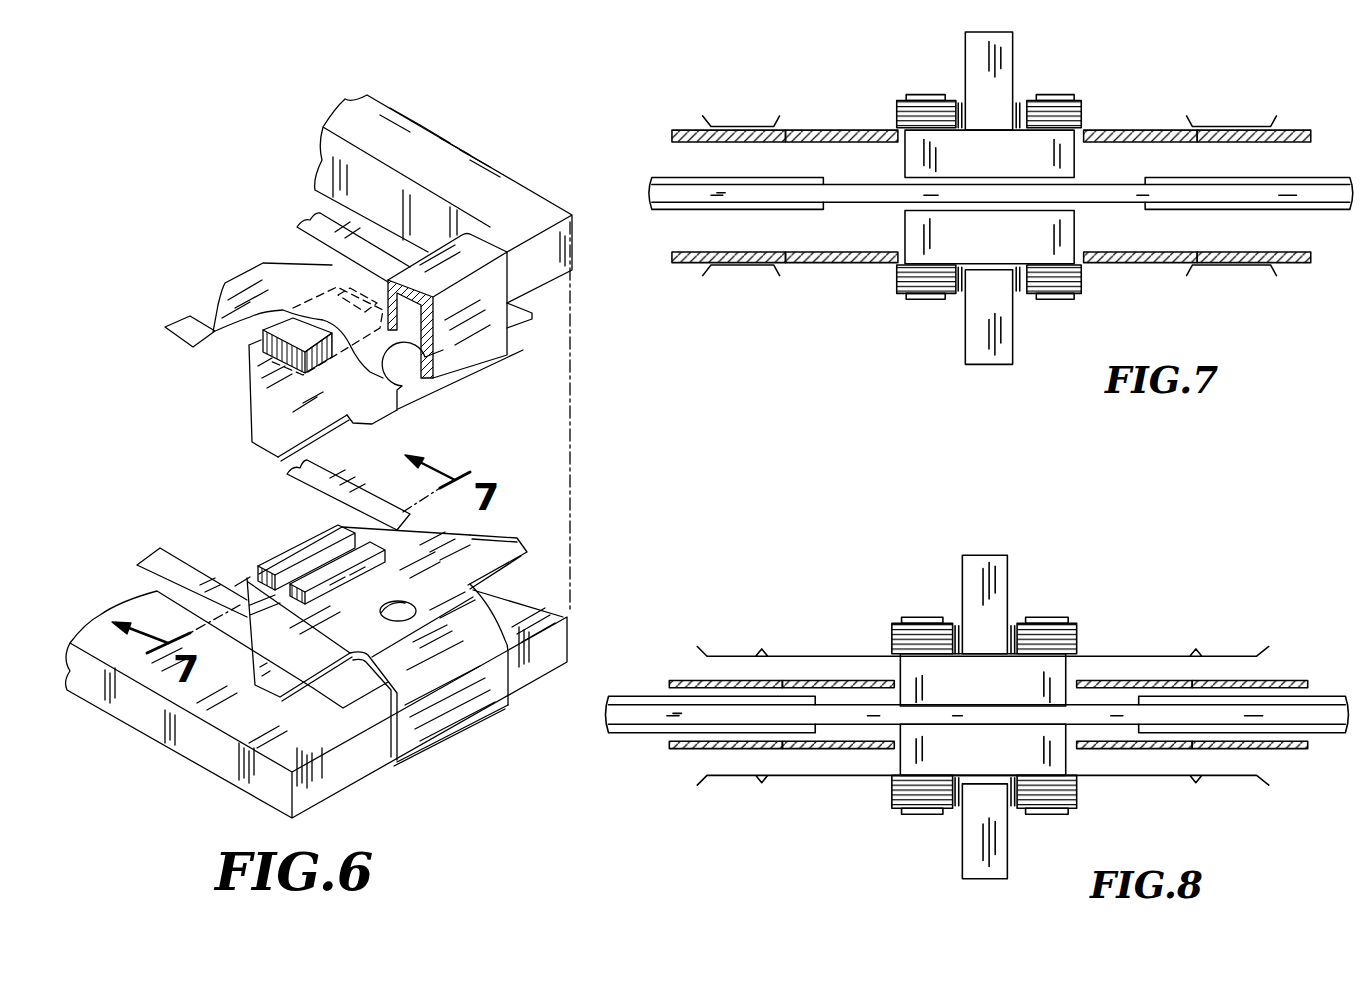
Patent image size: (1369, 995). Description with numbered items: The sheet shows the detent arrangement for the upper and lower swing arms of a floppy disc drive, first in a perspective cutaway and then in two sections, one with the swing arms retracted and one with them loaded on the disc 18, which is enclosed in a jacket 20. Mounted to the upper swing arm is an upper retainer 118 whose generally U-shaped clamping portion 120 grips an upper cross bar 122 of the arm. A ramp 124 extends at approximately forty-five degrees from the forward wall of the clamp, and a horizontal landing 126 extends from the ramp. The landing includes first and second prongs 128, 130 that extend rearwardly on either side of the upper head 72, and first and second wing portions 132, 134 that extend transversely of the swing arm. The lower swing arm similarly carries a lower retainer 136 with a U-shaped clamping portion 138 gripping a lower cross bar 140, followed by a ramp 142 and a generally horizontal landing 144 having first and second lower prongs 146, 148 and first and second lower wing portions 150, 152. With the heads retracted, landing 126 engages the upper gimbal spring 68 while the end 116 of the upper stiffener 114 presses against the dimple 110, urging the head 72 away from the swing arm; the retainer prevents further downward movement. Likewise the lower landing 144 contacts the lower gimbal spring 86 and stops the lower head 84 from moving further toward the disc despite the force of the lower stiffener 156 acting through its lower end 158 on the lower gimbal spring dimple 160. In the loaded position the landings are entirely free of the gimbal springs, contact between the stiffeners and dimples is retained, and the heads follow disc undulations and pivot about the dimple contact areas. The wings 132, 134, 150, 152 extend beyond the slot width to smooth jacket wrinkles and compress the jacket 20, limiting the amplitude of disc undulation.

In FIG. 7, the disc 18 is at (1203, 165).
In FIG. 8, the disc 18 is at (1201, 682).
In FIG. 7, the jacket 20 is at (697, 177).
In FIG. 8, the jacket 20 is at (628, 692).
In FIG. 7, the upper gimbal spring 68 is at (725, 106).
In FIG. 8, the upper gimbal spring 68 is at (806, 628).
In FIG. 7, the upper head 72 is at (962, 139).
In FIG. 8, the upper head 72 is at (928, 666).
In FIG. 7, the lower head 84 is at (962, 212).
In FIG. 8, the lower head 84 is at (928, 713).
In FIG. 7, the lower gimbal spring 86 is at (990, 299).
In FIG. 8, the lower gimbal spring 86 is at (983, 798).
In FIG. 7, the dimple 110 is at (932, 103).
In FIG. 8, the dimple 110 is at (915, 626).
In FIG. 7, the upper stiffener 114 is at (955, 36).
In FIG. 8, the upper stiffener 114 is at (1020, 589).
In FIG. 7, the end 116 is at (1043, 89).
In FIG. 8, the end 116 is at (1035, 619).
In FIG. 6, the upper retainer 118 is at (457, 373).
In FIG. 6, the clamping portion 120 is at (573, 242).
In FIG. 6, the upper cross bar 122 is at (520, 213).
In FIG. 6, the ramp 124 is at (388, 415).
In FIG. 6, the landing 126 is at (345, 397).
In FIG. 6, the first prong 128 is at (262, 373).
In FIG. 7, the first prong 128 is at (801, 122).
In FIG. 8, the first prong 128 is at (820, 652).
In FIG. 6, the second prong 130 is at (340, 282).
In FIG. 7, the second prong 130 is at (1141, 150).
In FIG. 8, the second prong 130 is at (1000, 652).
In FIG. 6, the first wing portion 132 is at (270, 437).
In FIG. 7, the first wing portion 132 is at (683, 122).
In FIG. 8, the first wing portion 132 is at (661, 650).
In FIG. 6, the second wing portion 134 is at (517, 313).
In FIG. 7, the second wing portion 134 is at (1167, 121).
In FIG. 8, the second wing portion 134 is at (1251, 649).
In FIG. 6, the lower retainer 136 is at (447, 715).
In FIG. 6, the clamping portion 138 is at (395, 762).
In FIG. 6, the lower cross bar 140 is at (350, 750).
In FIG. 6, the ramp 142 is at (470, 632).
In FIG. 6, the landing 144 is at (455, 578).
In FIG. 6, the first lower prong 146 is at (217, 577).
In FIG. 7, the first lower prong 146 is at (850, 212).
In FIG. 8, the first lower prong 146 is at (869, 754).
In FIG. 6, the second lower prong 148 is at (385, 540).
In FIG. 7, the second lower prong 148 is at (1141, 240).
In FIG. 8, the second lower prong 148 is at (1101, 754).
In FIG. 6, the first lower wing portion 150 is at (278, 672).
In FIG. 7, the first lower wing portion 150 is at (695, 213).
In FIG. 8, the first lower wing portion 150 is at (692, 776).
In FIG. 6, the second lower wing portion 152 is at (498, 548).
In FIG. 7, the second lower wing portion 152 is at (1261, 240).
In FIG. 8, the second lower wing portion 152 is at (1258, 780).
In FIG. 7, the lower stiffener 156 is at (923, 293).
In FIG. 8, the lower stiffener 156 is at (900, 803).
In FIG. 7, the lower end 158 is at (1038, 299).
In FIG. 8, the lower end 158 is at (1035, 816).
In FIG. 7, the lower gimbal spring dimple 160 is at (940, 299).
In FIG. 8, the lower gimbal spring dimple 160 is at (937, 816).